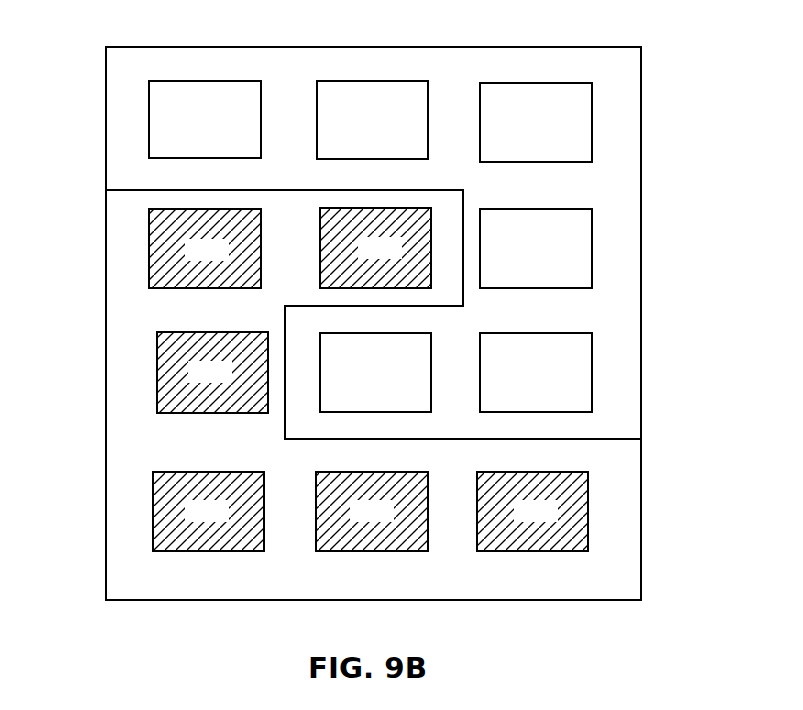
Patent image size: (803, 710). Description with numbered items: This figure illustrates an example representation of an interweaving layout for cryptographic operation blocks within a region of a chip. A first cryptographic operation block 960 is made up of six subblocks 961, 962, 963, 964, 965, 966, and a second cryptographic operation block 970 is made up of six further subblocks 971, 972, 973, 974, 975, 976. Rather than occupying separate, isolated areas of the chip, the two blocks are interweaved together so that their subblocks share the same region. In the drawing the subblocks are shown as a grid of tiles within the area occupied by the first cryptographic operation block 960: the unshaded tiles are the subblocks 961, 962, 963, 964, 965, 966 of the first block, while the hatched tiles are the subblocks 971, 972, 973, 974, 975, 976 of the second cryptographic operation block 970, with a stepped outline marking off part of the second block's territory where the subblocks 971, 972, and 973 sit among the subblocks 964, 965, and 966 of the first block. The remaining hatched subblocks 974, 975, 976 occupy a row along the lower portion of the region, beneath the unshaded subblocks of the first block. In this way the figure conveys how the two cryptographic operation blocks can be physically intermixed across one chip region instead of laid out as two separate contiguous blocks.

The first cryptographic operation block 960 is at (642, 113).
The second cryptographic operation block 970 is at (106, 312).
The subblock 961 is at (224, 134).
The subblock 962 is at (387, 130).
The subblock 963 is at (557, 136).
The subblock 964 is at (555, 260).
The subblock 965 is at (562, 384).
The subblock 966 is at (398, 384).
The subblock 971 is at (397, 258).
The subblock 972 is at (224, 260).
The subblock 973 is at (227, 382).
The subblock 974 is at (224, 521).
The subblock 975 is at (389, 521).
The subblock 976 is at (553, 521).